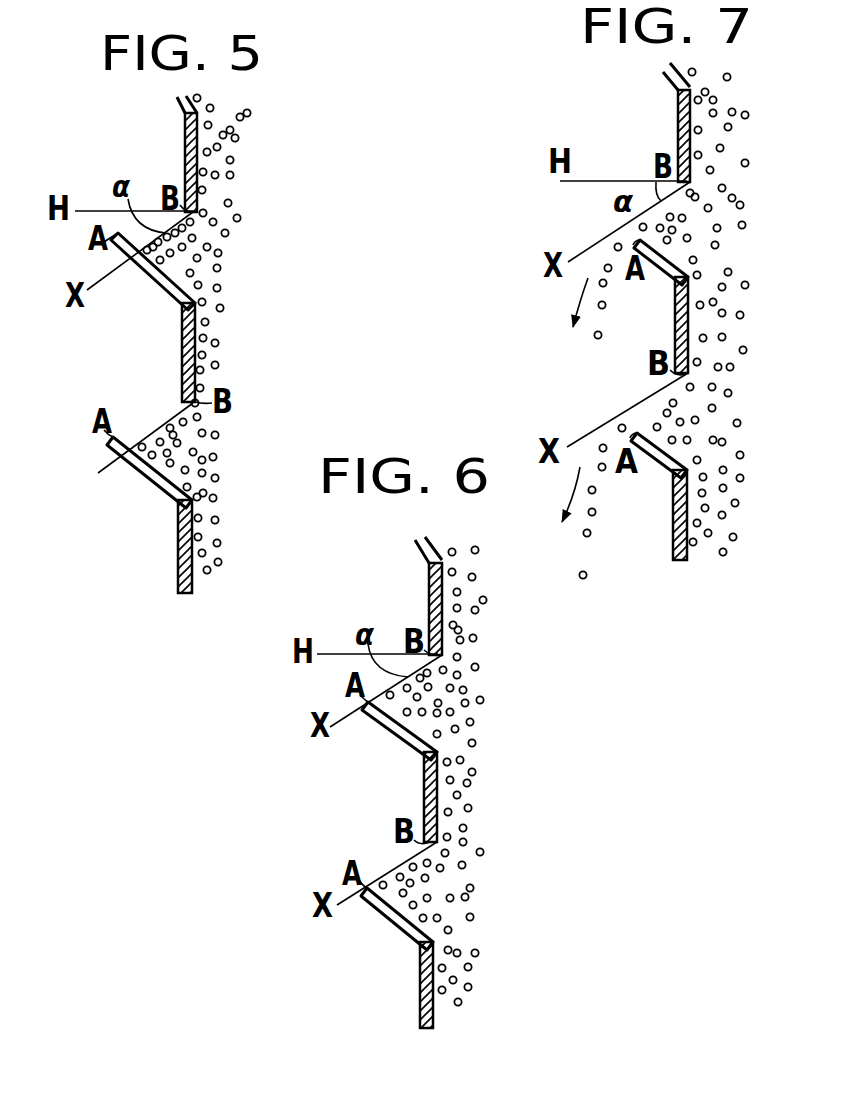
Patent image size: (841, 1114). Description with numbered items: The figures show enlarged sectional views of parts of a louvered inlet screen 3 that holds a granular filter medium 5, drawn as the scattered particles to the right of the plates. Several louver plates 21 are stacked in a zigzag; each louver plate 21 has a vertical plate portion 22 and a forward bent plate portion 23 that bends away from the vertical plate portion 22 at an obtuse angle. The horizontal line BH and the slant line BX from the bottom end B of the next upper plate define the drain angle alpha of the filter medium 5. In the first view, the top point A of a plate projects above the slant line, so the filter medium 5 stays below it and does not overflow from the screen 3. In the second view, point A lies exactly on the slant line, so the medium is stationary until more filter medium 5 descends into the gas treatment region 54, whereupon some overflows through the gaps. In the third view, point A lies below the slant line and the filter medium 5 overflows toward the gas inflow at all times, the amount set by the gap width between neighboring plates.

In FIG. 5, the inlet screen 3 is at (140, 342).
In FIG. 6, the inlet screen 3 is at (308, 771).
In FIG. 7, the inlet screen 3 is at (530, 322).
In FIG. 5, the filter medium 5 is at (197, 257).
In FIG. 6, the filter medium 5 is at (455, 885).
In FIG. 7, the filter medium 5 is at (720, 303).
In FIG. 5, the louver plate 21 is at (85, 507).
In FIG. 6, the louver plate 21 is at (420, 963).
In FIG. 7, the louver plate 21 is at (687, 543).
In FIG. 5, the vertical plate portion 22 is at (178, 558).
In FIG. 5, the forward bent plate portion 23 is at (167, 494).
In FIG. 6, the gas treatment region 54 is at (457, 810).